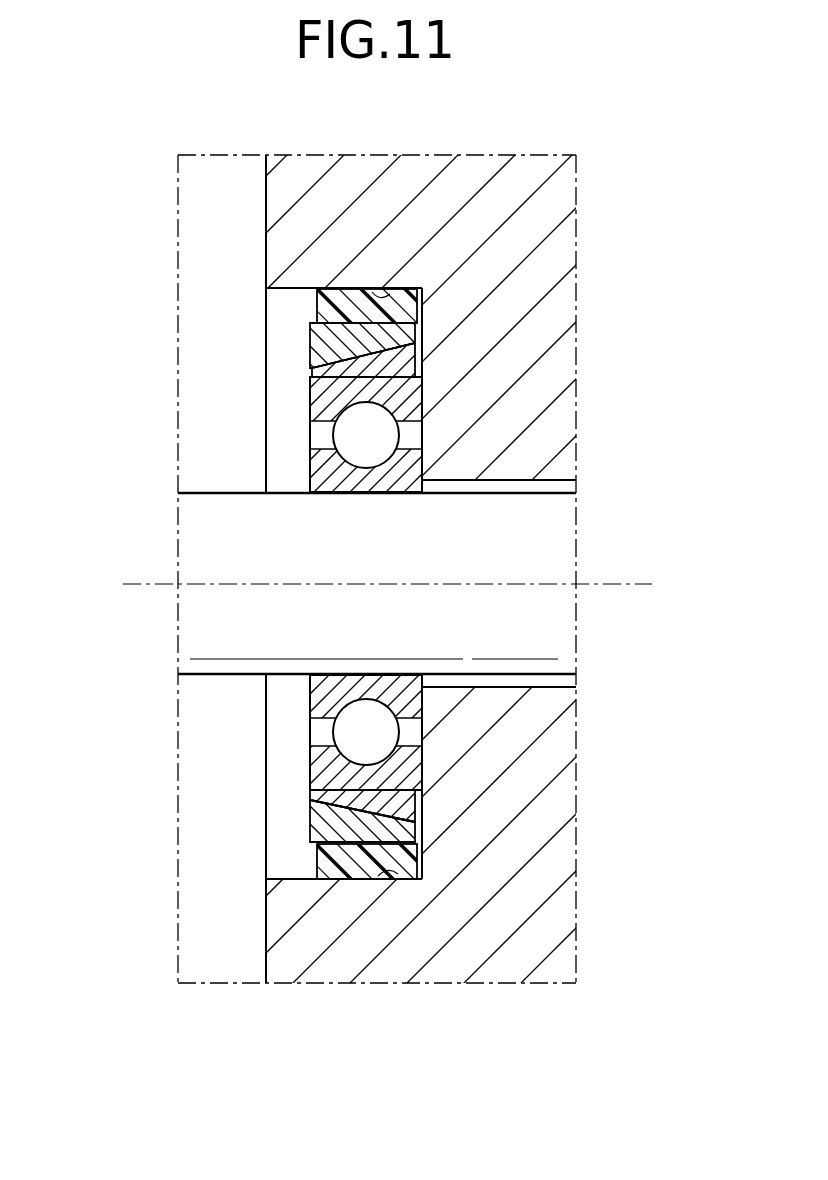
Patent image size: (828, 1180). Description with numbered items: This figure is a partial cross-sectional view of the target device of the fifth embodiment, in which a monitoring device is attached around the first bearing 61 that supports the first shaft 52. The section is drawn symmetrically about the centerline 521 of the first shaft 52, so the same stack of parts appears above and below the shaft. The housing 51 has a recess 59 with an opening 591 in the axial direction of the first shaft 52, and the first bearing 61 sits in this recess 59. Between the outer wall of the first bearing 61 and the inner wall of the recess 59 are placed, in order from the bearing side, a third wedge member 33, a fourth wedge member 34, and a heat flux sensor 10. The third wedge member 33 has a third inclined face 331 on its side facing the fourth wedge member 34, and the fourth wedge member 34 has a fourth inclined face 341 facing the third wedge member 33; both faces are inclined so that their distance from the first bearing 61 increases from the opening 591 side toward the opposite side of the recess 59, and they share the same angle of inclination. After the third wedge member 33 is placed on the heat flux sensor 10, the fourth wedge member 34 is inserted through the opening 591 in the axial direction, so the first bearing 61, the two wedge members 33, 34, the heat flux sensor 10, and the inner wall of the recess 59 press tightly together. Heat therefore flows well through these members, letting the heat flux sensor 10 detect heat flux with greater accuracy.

The heat flux sensor 10 is at (320, 297).
The third wedge member 33 is at (403, 365).
The third inclined face 331 is at (405, 335).
The fourth wedge member 34 is at (313, 340).
The fourth inclined face 341 is at (313, 365).
The housing 51 is at (503, 188).
The first shaft 52 is at (208, 543).
The centerline 521 is at (224, 584).
The recess 59 is at (392, 296).
The opening 591 is at (265, 392).
The first bearing 61 is at (283, 406).